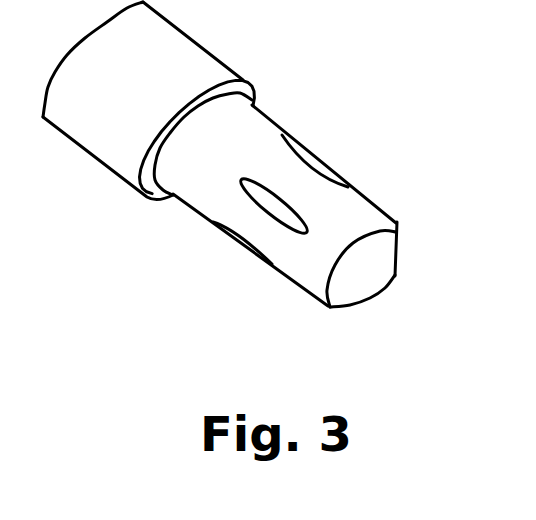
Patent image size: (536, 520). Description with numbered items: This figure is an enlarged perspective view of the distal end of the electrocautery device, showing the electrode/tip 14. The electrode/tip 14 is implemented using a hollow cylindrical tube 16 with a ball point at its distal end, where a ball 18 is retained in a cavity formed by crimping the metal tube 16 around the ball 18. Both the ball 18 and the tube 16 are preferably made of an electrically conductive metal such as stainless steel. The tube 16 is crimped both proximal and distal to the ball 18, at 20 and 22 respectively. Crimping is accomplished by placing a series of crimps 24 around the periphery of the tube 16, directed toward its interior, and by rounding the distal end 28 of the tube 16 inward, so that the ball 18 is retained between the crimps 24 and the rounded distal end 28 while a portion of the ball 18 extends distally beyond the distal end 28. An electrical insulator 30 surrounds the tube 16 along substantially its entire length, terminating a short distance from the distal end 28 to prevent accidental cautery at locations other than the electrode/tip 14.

The electrode/tip 14 is at (171, 244).
The hollow cylindrical tube 16 is at (230, 108).
The ball 18 is at (392, 278).
The proximal crimp location 20 is at (350, 137).
The distal crimp location 22 is at (328, 308).
The crimps 24 is at (265, 193).
The distal end 28 is at (398, 222).
The electrical insulator 30 is at (172, 43).